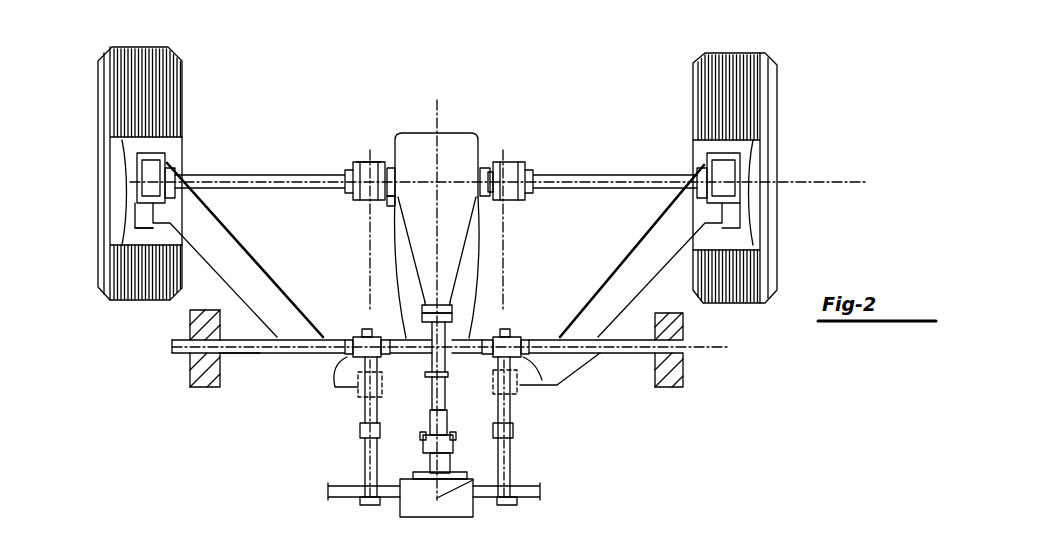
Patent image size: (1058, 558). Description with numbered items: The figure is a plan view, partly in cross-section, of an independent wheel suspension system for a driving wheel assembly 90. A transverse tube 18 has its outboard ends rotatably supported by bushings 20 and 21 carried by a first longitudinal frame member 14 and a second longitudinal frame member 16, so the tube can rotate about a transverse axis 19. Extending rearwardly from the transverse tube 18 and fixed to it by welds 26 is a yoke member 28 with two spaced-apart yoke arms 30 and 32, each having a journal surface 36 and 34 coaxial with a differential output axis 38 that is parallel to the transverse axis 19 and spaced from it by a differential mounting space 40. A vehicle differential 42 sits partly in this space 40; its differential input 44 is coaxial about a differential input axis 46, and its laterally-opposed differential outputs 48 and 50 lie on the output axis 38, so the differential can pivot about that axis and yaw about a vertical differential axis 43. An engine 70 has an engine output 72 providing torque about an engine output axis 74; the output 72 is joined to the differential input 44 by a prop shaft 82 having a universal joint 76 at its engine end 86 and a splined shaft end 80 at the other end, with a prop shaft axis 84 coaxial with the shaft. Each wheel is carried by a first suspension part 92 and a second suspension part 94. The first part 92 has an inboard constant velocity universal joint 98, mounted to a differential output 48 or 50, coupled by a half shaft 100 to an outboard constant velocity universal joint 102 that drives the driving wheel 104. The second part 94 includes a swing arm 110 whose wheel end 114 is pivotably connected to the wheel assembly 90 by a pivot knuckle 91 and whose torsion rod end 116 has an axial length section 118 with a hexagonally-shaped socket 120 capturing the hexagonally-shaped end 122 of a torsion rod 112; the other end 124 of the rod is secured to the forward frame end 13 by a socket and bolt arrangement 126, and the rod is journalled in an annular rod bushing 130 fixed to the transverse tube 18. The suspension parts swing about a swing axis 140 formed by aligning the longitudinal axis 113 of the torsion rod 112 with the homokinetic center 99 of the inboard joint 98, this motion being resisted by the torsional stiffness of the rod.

The forward frame end 13 is at (343, 499).
The first longitudinal frame member 14 is at (198, 386).
The second longitudinal frame member 16 is at (684, 378).
The transverse tube 18 is at (243, 354).
The transverse axis 19 is at (188, 350).
The bushing 20 is at (172, 343).
The bushing 21 is at (684, 337).
The welds 26 is at (390, 335).
The yoke member 28 is at (392, 280).
The yoke arm 30 is at (483, 244).
The yoke arm 32 is at (397, 303).
The journal surface 34 is at (390, 165).
The journal surface 36 is at (487, 165).
The differential output axis 38 is at (488, 158).
The differential mounting space 40 is at (458, 296).
The vehicle differential 42 is at (441, 132).
The vertical differential axis 43 is at (440, 178).
The differential input 44 is at (455, 329).
The differential input axis 46 is at (437, 103).
The differential output 48 is at (387, 205).
The differential output 50 is at (520, 200).
The engine 70 is at (458, 518).
The engine output 72 is at (450, 464).
The engine output axis 74 is at (467, 490).
The universal joint 76 is at (452, 438).
The splined shaft end 80 is at (432, 386).
The prop shaft 82 is at (428, 414).
The prop shaft axis 84 is at (448, 377).
The engine end 86 is at (455, 418).
The driving wheel assembly 90 is at (228, 57).
The pivot knuckle 91 is at (158, 218).
The first suspension part 92 is at (314, 117).
The second suspension part 94 is at (212, 284).
The inboard constant velocity universal joint 98 is at (352, 167).
The homokinetic center 99 is at (365, 162).
The half shaft 100 is at (262, 173).
The outboard constant velocity universal joint 102 is at (170, 165).
The driving wheel 104 is at (175, 95).
The swing arm 110 is at (248, 265).
The torsion rod 112 is at (362, 418).
The longitudinal axis 113 is at (380, 396).
The wheel end 114 is at (205, 221).
The torsion rod end 116 is at (360, 400).
The axial length section 118 is at (372, 410).
The hexagonally-shaped socket 120 is at (340, 380).
The hexagonally-shaped end 122 is at (337, 337).
The other end 124 is at (367, 486).
The hexagonally-shaped socket and bolt arrangement 126 is at (383, 490).
The annular rod bushing 130 is at (525, 334).
The swing axis 140 is at (369, 244).